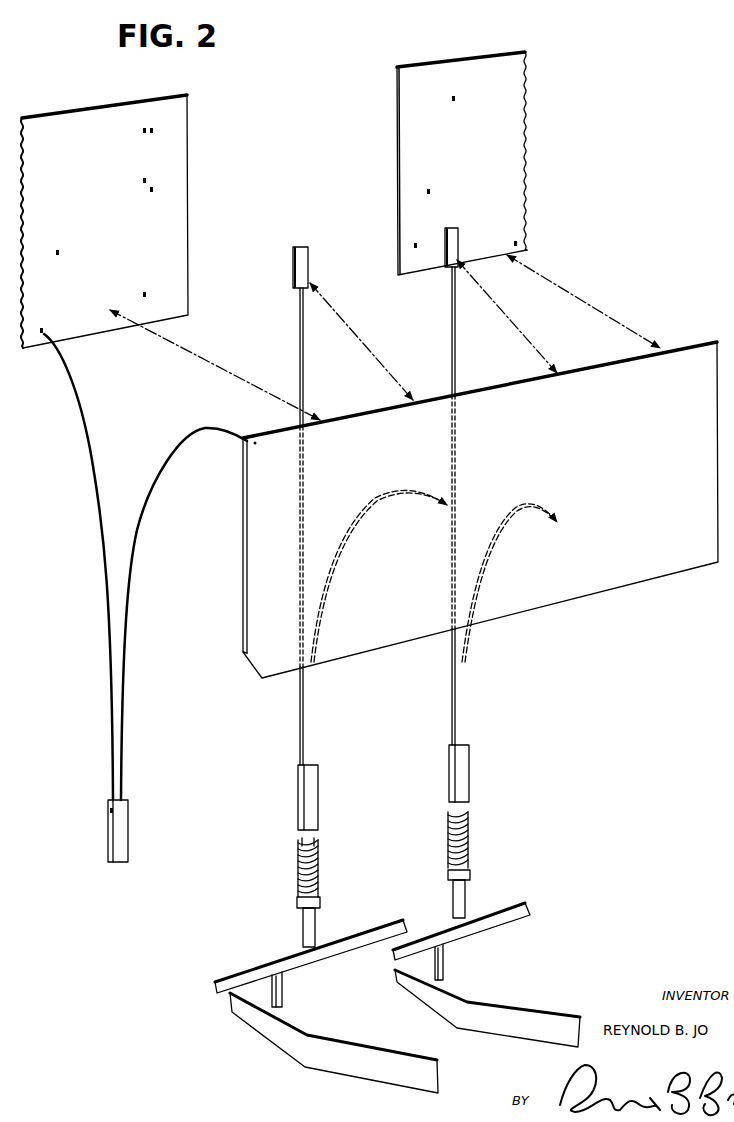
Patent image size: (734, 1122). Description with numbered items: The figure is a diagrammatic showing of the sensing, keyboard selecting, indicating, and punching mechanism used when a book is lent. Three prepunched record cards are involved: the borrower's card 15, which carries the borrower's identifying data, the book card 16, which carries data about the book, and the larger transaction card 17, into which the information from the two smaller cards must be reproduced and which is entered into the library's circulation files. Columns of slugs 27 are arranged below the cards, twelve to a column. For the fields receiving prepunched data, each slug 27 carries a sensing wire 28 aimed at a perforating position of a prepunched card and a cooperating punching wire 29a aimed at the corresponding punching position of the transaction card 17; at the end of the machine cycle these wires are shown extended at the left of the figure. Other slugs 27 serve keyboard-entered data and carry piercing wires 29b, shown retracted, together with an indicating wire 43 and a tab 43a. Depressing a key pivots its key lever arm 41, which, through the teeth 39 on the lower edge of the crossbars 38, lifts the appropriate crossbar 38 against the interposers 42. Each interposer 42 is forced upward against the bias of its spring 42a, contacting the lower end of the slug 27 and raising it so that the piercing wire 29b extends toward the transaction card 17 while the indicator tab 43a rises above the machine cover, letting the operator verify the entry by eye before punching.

The borrower's card 15 is at (520, 135).
The book card 16 is at (183, 138).
The transaction card 17 is at (638, 575).
The slug 27 is at (125, 842).
The sensing wire 28 is at (87, 410).
The punching wire 29a is at (195, 427).
The piercing wire 29b is at (364, 503).
The crossbar 38 is at (248, 973).
The tooth 39 is at (285, 993).
The key lever arm 41 is at (300, 1057).
The interposer 42 is at (315, 935).
The spring 42a is at (317, 872).
The indicating wire 43 is at (302, 338).
The indicator tab 43a is at (302, 246).